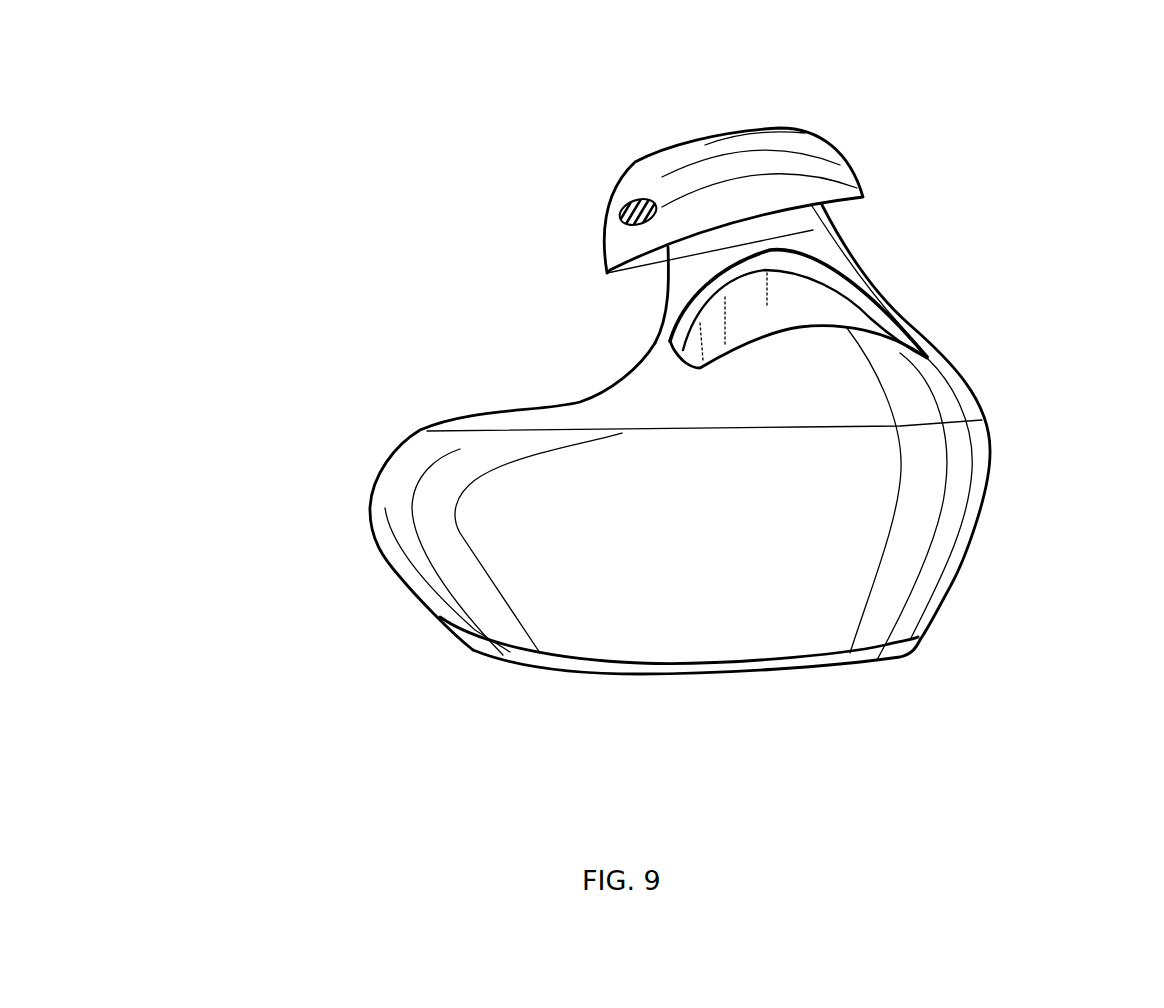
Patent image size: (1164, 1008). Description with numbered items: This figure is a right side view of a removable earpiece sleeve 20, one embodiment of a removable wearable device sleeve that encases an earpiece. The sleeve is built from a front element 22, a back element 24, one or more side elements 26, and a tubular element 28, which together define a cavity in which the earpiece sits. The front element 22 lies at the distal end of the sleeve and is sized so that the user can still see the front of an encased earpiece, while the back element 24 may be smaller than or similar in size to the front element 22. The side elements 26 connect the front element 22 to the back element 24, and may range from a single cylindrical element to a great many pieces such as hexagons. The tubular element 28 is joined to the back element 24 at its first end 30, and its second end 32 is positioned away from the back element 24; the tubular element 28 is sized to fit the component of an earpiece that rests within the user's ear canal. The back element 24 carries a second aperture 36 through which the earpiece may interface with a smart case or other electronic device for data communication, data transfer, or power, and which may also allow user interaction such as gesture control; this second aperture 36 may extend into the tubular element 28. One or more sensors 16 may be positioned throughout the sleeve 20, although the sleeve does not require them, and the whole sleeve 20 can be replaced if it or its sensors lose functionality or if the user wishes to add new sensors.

The sensor 16 is at (620, 205).
The removable earpiece sleeve 20 is at (248, 182).
The front element 22 is at (500, 647).
The back element 24 is at (943, 397).
The side element 26 is at (440, 567).
The tubular element 28 is at (708, 242).
The first end 30 is at (672, 268).
The second end 32 is at (800, 162).
The second aperture 36 is at (822, 302).